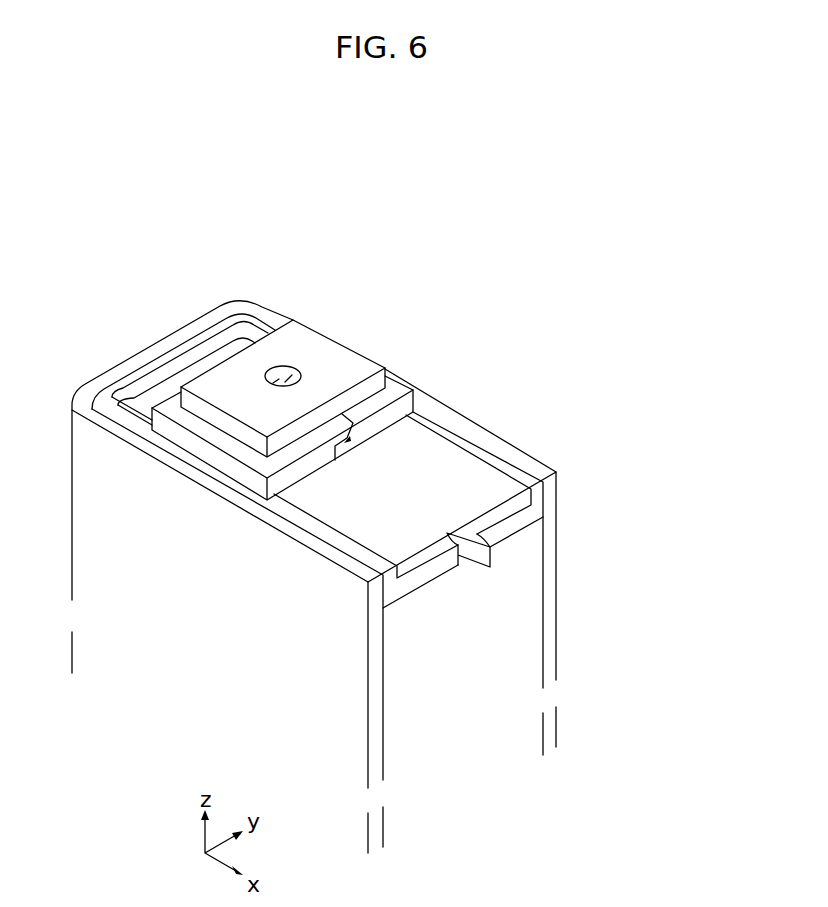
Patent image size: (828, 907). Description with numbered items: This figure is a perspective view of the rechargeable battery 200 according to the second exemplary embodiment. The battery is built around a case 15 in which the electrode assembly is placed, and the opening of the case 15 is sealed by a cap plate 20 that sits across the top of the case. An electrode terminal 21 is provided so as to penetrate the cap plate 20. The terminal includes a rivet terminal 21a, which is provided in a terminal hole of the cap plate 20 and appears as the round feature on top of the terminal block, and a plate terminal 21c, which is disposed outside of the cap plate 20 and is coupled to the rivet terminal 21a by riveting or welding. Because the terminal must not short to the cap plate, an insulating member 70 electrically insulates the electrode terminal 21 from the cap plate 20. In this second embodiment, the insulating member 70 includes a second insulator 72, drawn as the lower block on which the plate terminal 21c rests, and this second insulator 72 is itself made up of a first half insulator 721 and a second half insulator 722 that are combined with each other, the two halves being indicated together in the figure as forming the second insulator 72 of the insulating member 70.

The rechargeable battery 200 is at (399, 167).
The case 15 is at (551, 592).
The cap plate 20 is at (539, 500).
The negative electrode terminal 21 is at (313, 340).
The rivet terminal 21a is at (291, 367).
The plate terminal 21c is at (344, 372).
The insulating member 70 is at (432, 451).
The second insulator 72 is at (432, 451).
The first half insulator 721 is at (427, 380).
The second half insulator 722 is at (254, 506).